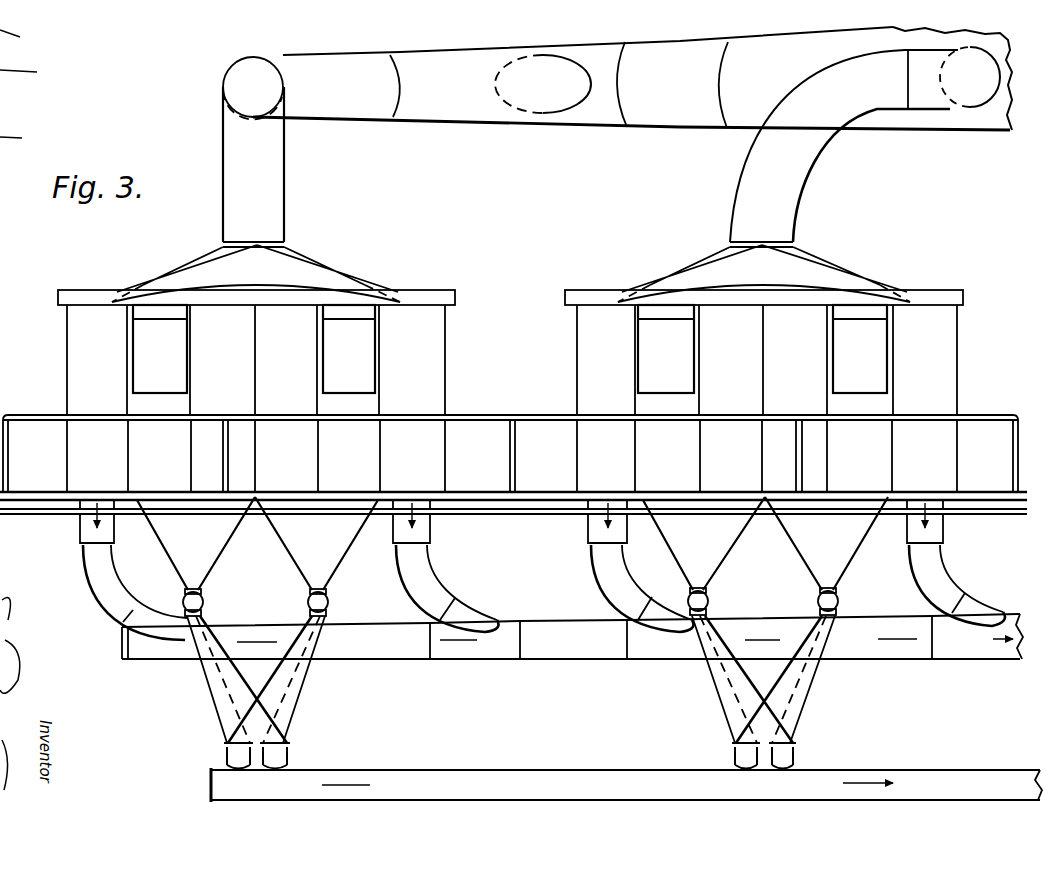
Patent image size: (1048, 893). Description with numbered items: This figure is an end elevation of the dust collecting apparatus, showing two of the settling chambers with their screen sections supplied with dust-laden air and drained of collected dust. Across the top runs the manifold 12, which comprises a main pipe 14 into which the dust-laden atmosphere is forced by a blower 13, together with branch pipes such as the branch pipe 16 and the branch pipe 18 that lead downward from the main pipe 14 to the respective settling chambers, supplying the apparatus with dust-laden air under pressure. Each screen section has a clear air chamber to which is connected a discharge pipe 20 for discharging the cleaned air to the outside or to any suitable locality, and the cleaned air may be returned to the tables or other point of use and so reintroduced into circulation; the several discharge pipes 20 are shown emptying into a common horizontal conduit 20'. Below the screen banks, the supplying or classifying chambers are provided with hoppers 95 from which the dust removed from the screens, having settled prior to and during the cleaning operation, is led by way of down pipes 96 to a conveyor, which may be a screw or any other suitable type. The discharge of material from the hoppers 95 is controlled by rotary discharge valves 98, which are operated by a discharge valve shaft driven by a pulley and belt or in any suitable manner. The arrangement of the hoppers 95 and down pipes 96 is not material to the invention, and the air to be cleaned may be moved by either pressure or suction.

The manifold 12 is at (617, 78).
The blower 13 is at (577, 383).
The main pipe 14 is at (561, 118).
The branch pipe 16 is at (286, 190).
The branch pipe 18 is at (781, 202).
The discharge pipe 20 is at (542, 570).
The horizontal conduit 20' is at (572, 654).
The hopper 95 is at (663, 533).
The down pipe 96 is at (812, 688).
The rotary discharge valve 98 is at (706, 596).